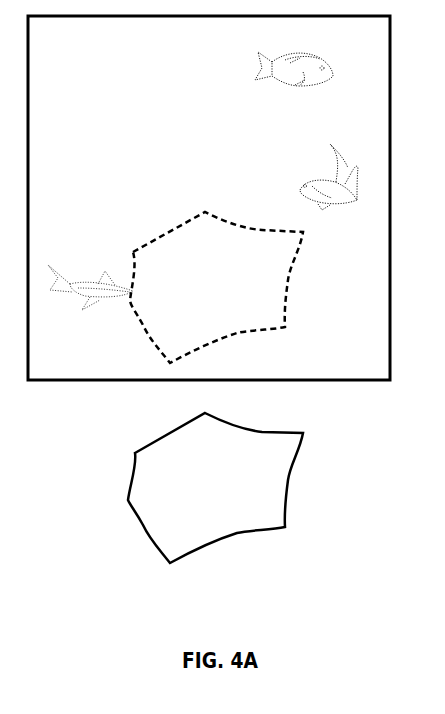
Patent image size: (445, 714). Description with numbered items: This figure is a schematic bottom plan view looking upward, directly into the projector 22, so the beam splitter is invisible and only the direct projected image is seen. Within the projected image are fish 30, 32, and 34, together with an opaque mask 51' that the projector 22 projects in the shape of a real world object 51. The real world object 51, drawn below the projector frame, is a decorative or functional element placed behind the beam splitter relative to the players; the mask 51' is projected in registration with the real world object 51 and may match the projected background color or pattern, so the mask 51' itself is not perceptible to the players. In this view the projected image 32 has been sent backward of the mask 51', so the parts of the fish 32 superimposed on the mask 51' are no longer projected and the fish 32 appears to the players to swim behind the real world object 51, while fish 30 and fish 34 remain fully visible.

The projector 22 is at (217, 110).
The fish 30 is at (309, 87).
The fish 34 is at (324, 177).
The projected image 32 is at (118, 283).
The mask 51' is at (216, 287).
The real world object 51 is at (215, 488).